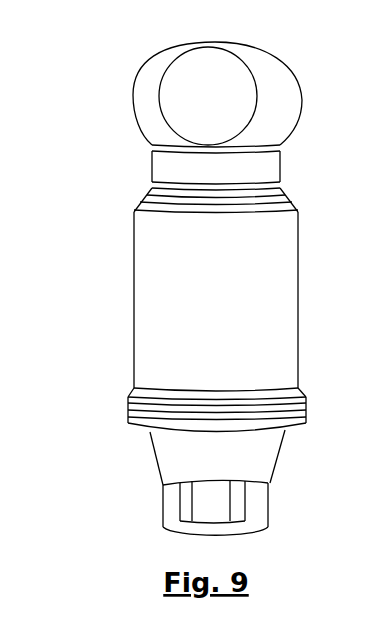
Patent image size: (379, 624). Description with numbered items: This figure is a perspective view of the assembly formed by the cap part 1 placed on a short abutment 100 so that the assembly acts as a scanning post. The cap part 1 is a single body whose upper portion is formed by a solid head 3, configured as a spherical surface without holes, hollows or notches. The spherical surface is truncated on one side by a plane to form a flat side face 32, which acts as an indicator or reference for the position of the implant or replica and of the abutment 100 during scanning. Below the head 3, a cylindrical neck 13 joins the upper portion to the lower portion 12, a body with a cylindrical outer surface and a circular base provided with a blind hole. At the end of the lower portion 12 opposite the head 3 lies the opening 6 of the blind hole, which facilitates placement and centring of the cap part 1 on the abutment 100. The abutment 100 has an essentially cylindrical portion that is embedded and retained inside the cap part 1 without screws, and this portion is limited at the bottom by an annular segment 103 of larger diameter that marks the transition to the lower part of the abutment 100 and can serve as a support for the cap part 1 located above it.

The cap part 1 is at (95, 183).
The head 3 is at (272, 83).
The side face 32 is at (199, 107).
The cylindrical neck 13 is at (263, 170).
The lower portion 12 is at (270, 323).
The opening 6 is at (153, 392).
The annular segment 103 is at (130, 412).
The abutment 100 is at (247, 455).